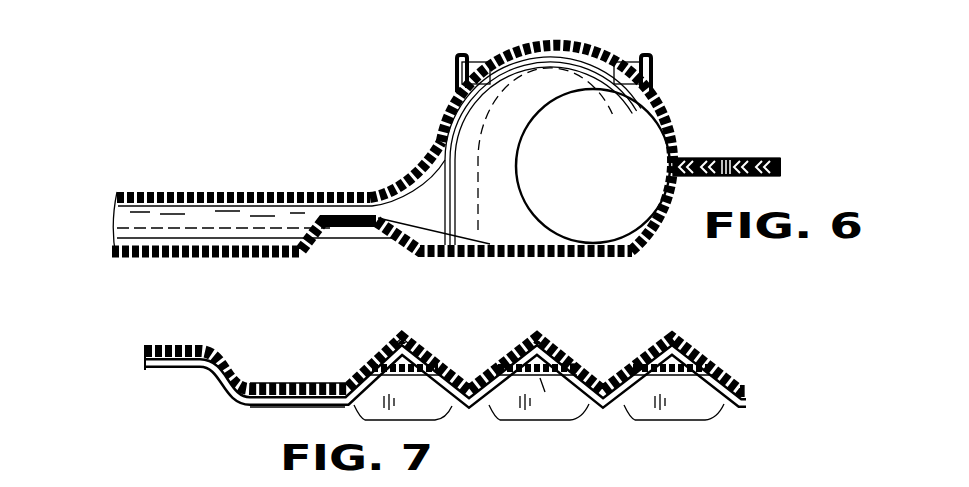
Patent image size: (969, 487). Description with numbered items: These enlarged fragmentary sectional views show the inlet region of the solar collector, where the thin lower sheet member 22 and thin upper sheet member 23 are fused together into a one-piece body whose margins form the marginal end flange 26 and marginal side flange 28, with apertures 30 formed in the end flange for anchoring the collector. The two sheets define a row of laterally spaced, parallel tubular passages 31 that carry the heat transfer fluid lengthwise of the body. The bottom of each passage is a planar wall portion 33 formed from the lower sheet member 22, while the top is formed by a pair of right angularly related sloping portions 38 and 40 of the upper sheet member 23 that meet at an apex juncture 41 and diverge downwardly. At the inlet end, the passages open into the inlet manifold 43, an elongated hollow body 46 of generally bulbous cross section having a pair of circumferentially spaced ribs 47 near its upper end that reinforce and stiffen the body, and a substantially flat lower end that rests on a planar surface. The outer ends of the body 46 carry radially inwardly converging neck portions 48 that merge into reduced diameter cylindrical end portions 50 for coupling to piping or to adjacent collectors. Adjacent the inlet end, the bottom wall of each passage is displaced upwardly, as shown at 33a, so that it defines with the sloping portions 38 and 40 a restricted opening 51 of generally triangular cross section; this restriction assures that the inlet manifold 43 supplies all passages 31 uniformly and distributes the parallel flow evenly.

In FIG. 6, the lower sheet member 22 is at (125, 257).
In FIG. 7, the lower sheet member 22 is at (270, 408).
In FIG. 6, the upper sheet member 23 is at (128, 192).
In FIG. 7, the upper sheet member 23 is at (265, 383).
In FIG. 6, the marginal end flange 26 is at (772, 158).
In FIG. 7, the marginal side flange 28 is at (172, 371).
In FIG. 6, the apertures 30 is at (738, 157).
In FIG. 6, the tubular passages 31 is at (208, 210).
In FIG. 7, the tubular passages 31 is at (366, 352).
In FIG. 7, the planar wall portion 33 is at (532, 423).
In FIG. 6, the upwardly displaced bottom wall 33a is at (350, 228).
In FIG. 7, the upwardly displaced bottom wall 33a is at (540, 378).
In FIG. 7, the sloping portion 38 is at (578, 368).
In FIG. 7, the sloping portion 40 is at (497, 362).
In FIG. 7, the apex juncture 41 is at (536, 331).
In FIG. 6, the inlet manifold 43 is at (430, 100).
In FIG. 6, the hollow body 46 is at (594, 40).
In FIG. 6, the ribs 47 is at (462, 54).
In FIG. 6, the neck portion 48 is at (513, 82).
In FIG. 6, the end portion 50 is at (662, 100).
In FIG. 6, the restricted opening 51 is at (354, 206).
In FIG. 7, the restricted opening 51 is at (437, 350).